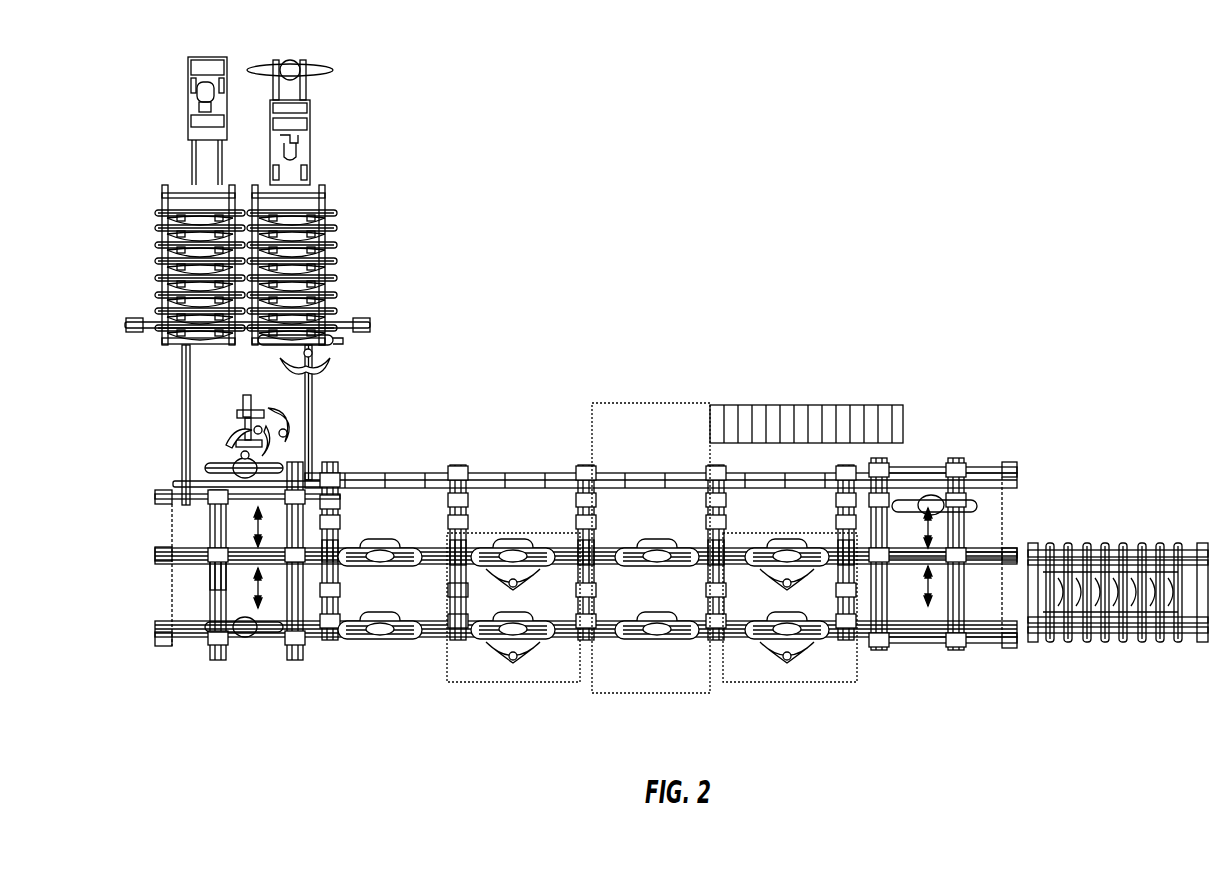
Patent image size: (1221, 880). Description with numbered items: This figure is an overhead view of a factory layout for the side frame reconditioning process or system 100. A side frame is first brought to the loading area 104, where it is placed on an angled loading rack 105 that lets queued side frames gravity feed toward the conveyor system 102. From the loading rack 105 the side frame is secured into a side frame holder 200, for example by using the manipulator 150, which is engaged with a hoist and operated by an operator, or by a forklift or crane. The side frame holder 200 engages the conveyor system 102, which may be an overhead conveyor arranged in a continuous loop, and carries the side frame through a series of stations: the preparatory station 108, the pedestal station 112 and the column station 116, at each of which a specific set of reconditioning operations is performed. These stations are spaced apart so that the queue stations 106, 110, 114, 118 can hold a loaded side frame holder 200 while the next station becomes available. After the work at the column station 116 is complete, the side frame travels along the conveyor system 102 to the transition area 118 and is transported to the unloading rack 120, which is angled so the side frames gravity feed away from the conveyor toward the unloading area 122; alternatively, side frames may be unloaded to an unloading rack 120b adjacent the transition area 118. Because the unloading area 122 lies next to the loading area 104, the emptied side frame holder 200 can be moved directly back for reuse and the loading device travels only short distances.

The reconditioning process or system 100 is at (620, 212).
The conveyor system 102 is at (428, 462).
The loading area 104 is at (190, 120).
The loading rack 105 is at (162, 268).
The queue station 106 is at (160, 312).
The preparatory station 108 is at (292, 428).
The queue station 110 is at (380, 641).
The pedestal station 112 is at (527, 540).
The queue station 114 is at (640, 668).
The column station 116 is at (770, 553).
The transition area 118 is at (957, 650).
The unloading rack 120 is at (332, 268).
The unloading rack 120b is at (1082, 645).
The unloading area 122 is at (310, 138).
The manipulator 150 is at (240, 418).
The side frame holder 200 is at (205, 477).